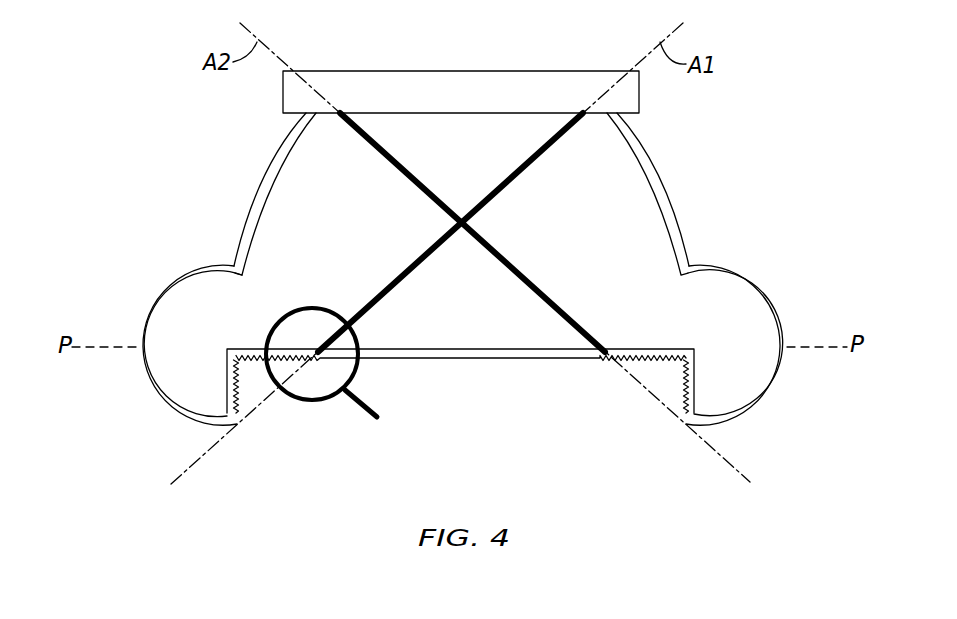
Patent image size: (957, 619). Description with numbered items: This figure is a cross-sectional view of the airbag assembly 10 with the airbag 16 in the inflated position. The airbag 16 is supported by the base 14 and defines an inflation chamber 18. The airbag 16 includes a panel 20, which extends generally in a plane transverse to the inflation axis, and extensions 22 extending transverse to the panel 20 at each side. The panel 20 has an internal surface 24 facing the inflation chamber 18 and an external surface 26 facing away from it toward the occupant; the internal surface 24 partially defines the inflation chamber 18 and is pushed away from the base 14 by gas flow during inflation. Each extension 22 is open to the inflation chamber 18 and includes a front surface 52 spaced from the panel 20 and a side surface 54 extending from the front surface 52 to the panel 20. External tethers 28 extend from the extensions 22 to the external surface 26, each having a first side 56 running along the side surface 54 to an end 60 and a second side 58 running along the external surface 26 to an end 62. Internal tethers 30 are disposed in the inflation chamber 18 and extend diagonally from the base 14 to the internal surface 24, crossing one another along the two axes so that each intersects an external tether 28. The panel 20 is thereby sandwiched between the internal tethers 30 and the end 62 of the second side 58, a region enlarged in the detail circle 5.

The airbag assembly 10 is at (138, 94).
The base 14 is at (518, 68).
The airbag 16 is at (671, 209).
The inflation chamber 18 is at (617, 180).
The panel 20 is at (462, 362).
The extension 22 is at (140, 329).
The internal surface 24 is at (438, 348).
The external surface 26 is at (415, 360).
The external tether 28 is at (248, 410).
The internal tether 30 is at (393, 168).
The front surface 52 is at (170, 413).
The side surface 54 is at (231, 362).
The first side 56 is at (244, 400).
The second side 58 is at (250, 362).
The end 60 is at (245, 414).
The end 62 is at (318, 364).
The detail circle for FIG. 5 is at (331, 373).